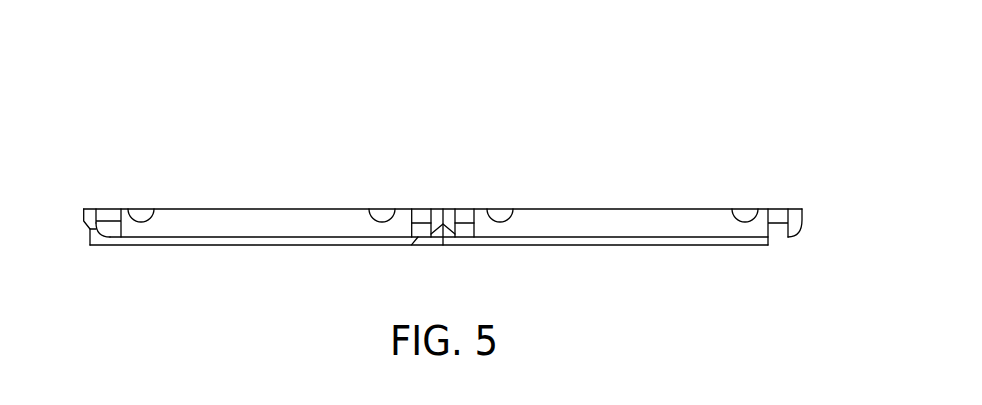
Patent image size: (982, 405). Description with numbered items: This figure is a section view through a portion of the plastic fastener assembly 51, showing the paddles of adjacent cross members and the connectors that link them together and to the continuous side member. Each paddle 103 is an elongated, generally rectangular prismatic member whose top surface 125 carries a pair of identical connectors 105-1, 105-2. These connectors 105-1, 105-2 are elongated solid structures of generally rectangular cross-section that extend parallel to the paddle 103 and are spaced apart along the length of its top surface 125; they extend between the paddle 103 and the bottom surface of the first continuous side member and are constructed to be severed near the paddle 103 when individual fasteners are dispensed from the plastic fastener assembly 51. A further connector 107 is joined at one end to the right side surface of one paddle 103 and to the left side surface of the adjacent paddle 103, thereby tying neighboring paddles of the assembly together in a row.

The plastic fastener assembly 51 is at (557, 110).
The paddle 103 is at (252, 198).
The connector 105-1 is at (142, 210).
The connector 105-2 is at (382, 207).
The connector 107 is at (445, 202).
The top surface 125 is at (224, 237).